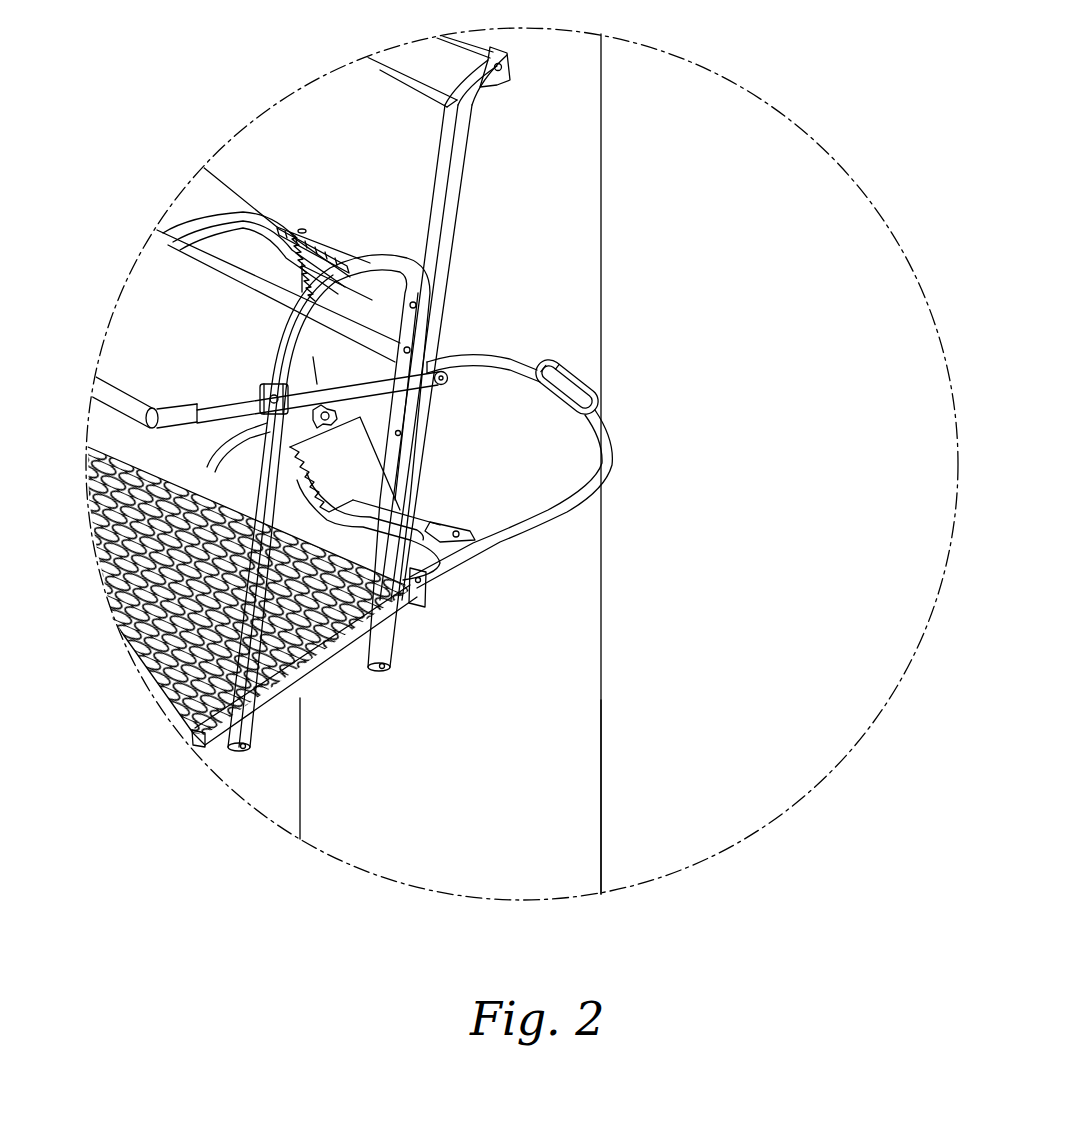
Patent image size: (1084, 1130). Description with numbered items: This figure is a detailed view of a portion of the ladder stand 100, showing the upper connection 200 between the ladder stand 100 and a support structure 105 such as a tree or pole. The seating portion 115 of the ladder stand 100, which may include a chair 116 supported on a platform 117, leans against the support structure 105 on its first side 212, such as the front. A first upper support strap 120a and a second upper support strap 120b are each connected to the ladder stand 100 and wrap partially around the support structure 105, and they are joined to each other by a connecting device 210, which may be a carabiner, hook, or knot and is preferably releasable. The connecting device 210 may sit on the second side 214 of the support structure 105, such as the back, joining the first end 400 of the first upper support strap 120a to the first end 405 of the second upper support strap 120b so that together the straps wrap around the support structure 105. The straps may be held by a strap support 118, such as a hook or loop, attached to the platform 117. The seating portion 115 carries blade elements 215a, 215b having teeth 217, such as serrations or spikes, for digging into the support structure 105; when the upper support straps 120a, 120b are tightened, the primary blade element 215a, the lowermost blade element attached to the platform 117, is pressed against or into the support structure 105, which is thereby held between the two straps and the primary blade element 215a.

The ladder stand 100 is at (103, 210).
The support structure 105 is at (576, 193).
The seating portion 115 is at (343, 157).
The chair 116 is at (146, 321).
The platform 117 is at (102, 596).
The strap support 118 is at (205, 465).
The first upper support strap 120a is at (492, 352).
The second upper support strap 120b is at (533, 540).
The upper connection 200 is at (632, 337).
The connecting device 210 is at (557, 360).
The first side 212 is at (322, 818).
The second side 214 is at (618, 758).
The primary blade element 215a is at (347, 503).
The blade element 215b is at (320, 237).
The teeth 217 is at (343, 250).
The first end of the first upper support strap 400 is at (507, 373).
The first end of the second upper support strap 405 is at (607, 420).